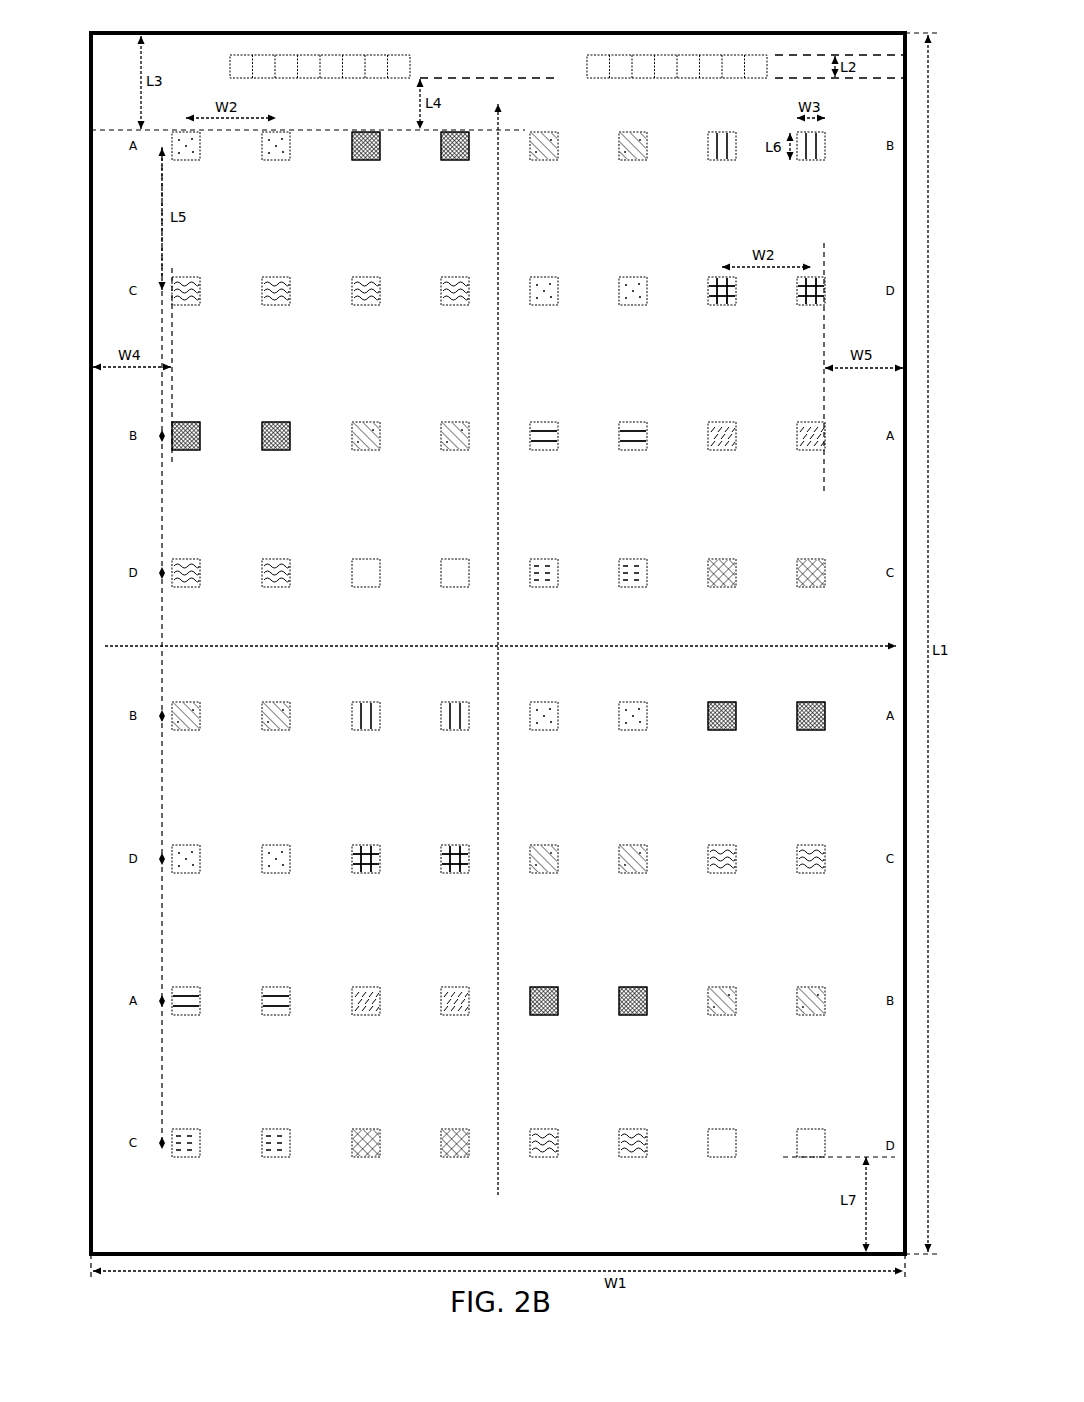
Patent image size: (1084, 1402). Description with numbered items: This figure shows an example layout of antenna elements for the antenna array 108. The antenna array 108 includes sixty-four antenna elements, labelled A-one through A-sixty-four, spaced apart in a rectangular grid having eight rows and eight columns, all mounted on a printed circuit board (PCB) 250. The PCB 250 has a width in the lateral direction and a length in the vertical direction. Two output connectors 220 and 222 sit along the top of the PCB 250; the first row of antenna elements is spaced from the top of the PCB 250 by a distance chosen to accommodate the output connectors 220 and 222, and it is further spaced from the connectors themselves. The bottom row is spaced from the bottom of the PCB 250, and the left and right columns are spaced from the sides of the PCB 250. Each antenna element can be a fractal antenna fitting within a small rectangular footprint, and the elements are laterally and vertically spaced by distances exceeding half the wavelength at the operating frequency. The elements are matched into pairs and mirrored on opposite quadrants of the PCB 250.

The antenna array 108 is at (467, 643).
The output connector 220 is at (392, 45).
The output connector 222 is at (746, 45).
The printed circuit board 250 is at (507, 680).